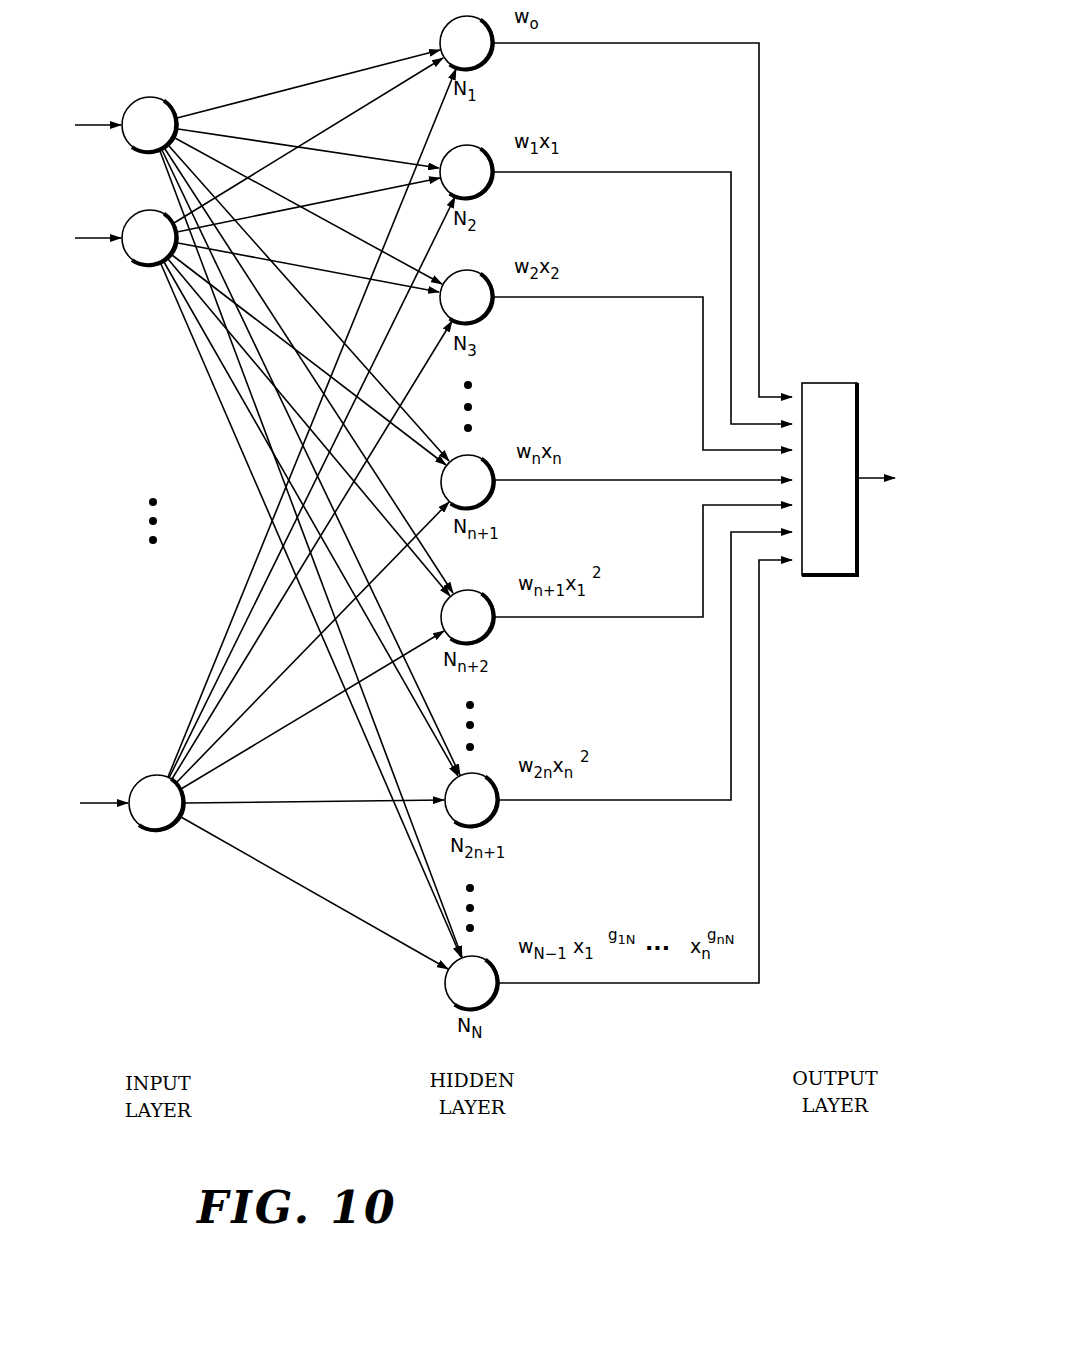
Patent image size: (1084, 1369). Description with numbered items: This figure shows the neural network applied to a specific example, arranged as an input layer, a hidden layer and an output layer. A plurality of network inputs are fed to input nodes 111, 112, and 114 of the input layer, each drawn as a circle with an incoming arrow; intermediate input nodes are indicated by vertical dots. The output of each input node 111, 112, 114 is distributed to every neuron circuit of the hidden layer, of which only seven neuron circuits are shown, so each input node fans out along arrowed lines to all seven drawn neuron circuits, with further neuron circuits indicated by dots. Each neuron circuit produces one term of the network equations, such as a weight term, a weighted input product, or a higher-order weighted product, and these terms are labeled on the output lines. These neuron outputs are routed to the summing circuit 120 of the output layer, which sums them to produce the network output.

The input node 111 is at (137, 101).
The input node 112 is at (137, 263).
The input node 114 is at (142, 829).
The summing circuit 120 is at (836, 382).